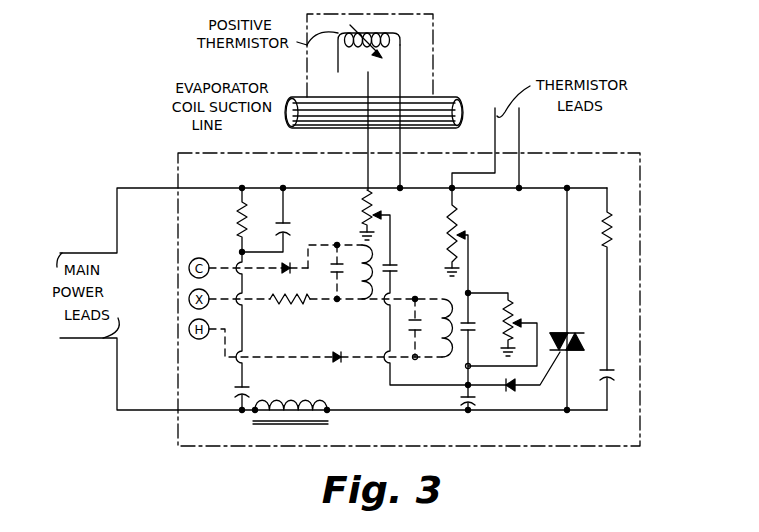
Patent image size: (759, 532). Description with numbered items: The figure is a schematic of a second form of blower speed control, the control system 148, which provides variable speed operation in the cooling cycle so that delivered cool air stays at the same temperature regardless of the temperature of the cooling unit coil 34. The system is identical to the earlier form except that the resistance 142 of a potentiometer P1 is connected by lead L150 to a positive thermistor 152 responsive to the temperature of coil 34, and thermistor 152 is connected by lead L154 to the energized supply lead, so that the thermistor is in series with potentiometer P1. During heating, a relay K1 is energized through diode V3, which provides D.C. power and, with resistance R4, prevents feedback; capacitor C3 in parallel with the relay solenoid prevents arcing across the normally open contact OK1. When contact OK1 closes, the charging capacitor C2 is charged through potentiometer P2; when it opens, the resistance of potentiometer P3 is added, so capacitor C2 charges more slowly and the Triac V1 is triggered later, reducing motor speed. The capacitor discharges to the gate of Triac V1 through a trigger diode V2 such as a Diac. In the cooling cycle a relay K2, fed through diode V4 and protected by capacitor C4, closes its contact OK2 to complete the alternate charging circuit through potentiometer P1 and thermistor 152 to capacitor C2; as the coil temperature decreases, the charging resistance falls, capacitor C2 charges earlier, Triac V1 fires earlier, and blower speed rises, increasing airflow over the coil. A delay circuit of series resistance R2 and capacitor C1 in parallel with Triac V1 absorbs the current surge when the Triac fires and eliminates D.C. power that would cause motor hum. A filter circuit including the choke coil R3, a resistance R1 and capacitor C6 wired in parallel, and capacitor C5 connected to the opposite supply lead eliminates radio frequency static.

The control system 148 is at (136, 136).
The positive thermistor 152 is at (436, 35).
The cooling unit coil 34 is at (438, 98).
The lead L150 is at (366, 138).
The lead L154 is at (402, 144).
The resistance of potentiometer P1 142 is at (376, 215).
The resistance R1 is at (229, 220).
The capacitor C6 is at (275, 219).
The capacitor C5 is at (252, 392).
The diode V4 is at (272, 263).
The capacitor C4 is at (326, 272).
The relay K2 is at (373, 272).
The resistance R4 is at (290, 308).
The diode V3 is at (342, 366).
The potentiometer P1 is at (385, 227).
The normally open contact of relay K2 OK2 is at (471, 324).
The potentiometer P2 is at (466, 240).
The capacitor C3 is at (405, 328).
The relay K1 is at (453, 328).
The normally open contact of relay K1 OK1 is at (481, 339).
The potentiometer P3 is at (504, 329).
The trigger diode V2 is at (522, 392).
The charging capacitor C2 is at (456, 399).
The Triac V1 is at (568, 299).
The resistance R2 is at (615, 279).
The capacitor C1 is at (616, 389).
The choke coil R3 is at (291, 406).